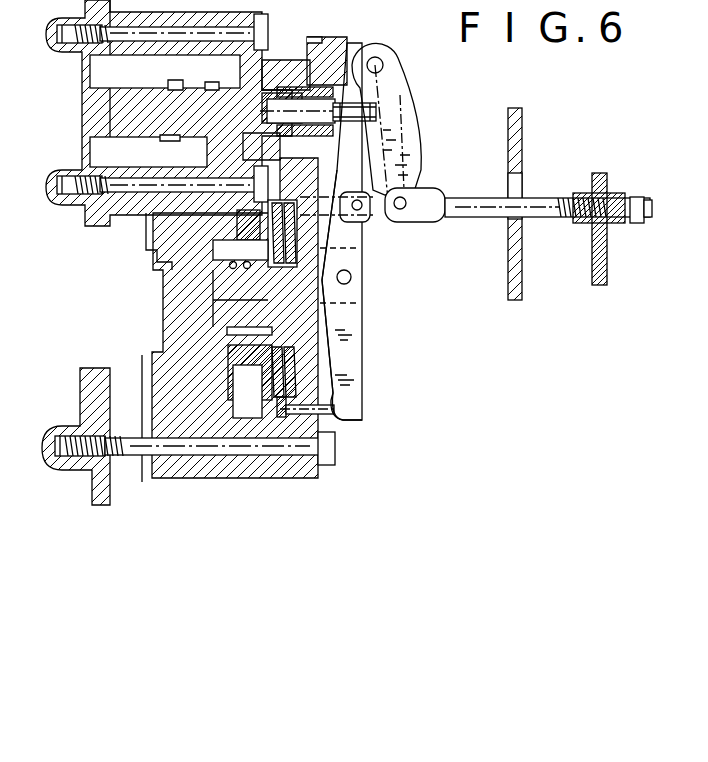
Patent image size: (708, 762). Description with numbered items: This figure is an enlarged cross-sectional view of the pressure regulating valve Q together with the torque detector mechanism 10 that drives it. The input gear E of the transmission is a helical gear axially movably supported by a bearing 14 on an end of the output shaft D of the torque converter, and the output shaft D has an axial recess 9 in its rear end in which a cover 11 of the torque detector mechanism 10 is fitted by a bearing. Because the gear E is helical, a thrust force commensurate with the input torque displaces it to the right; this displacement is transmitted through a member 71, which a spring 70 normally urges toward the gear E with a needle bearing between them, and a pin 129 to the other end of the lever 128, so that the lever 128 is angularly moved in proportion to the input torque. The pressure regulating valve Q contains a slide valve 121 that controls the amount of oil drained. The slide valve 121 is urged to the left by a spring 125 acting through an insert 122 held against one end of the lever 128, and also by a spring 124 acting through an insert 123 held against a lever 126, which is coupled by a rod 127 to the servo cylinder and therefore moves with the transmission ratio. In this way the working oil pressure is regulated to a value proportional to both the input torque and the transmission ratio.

The slide valve 121 is at (265, 88).
The spring 125 is at (305, 72).
The spring 124 is at (347, 53).
The insert 123 is at (373, 107).
The insert 122 is at (380, 120).
The lever 126 is at (410, 155).
The rod 127 is at (527, 205).
The lever 128 is at (362, 236).
The cover 11 is at (300, 287).
The spring 70 is at (338, 353).
The member 71 is at (338, 390).
The pin 129 is at (330, 414).
The torque detector mechanism 10 is at (332, 427).
The input gear E is at (258, 405).
The output shaft D is at (185, 322).
The axial recess 9 is at (248, 325).
The bearing 14 is at (163, 270).
The pressure regulating valve Q is at (454, 311).